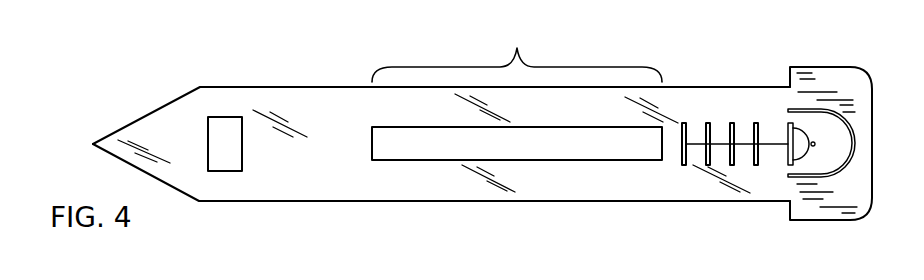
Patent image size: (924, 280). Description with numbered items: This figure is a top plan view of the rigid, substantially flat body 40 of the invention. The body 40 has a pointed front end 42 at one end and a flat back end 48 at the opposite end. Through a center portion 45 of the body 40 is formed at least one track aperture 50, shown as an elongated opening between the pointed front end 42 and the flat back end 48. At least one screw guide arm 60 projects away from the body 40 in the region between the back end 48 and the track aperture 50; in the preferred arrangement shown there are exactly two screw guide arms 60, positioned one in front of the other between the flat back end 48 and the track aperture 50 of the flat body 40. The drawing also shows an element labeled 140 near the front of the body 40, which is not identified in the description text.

The flat body 40 is at (290, 102).
The pointed front end 42 is at (117, 132).
The window 140 is at (224, 122).
The center portion 45 is at (525, 108).
The track aperture 50 is at (413, 153).
The screw guide arm 60 is at (692, 158).
The flat back end 48 is at (838, 87).